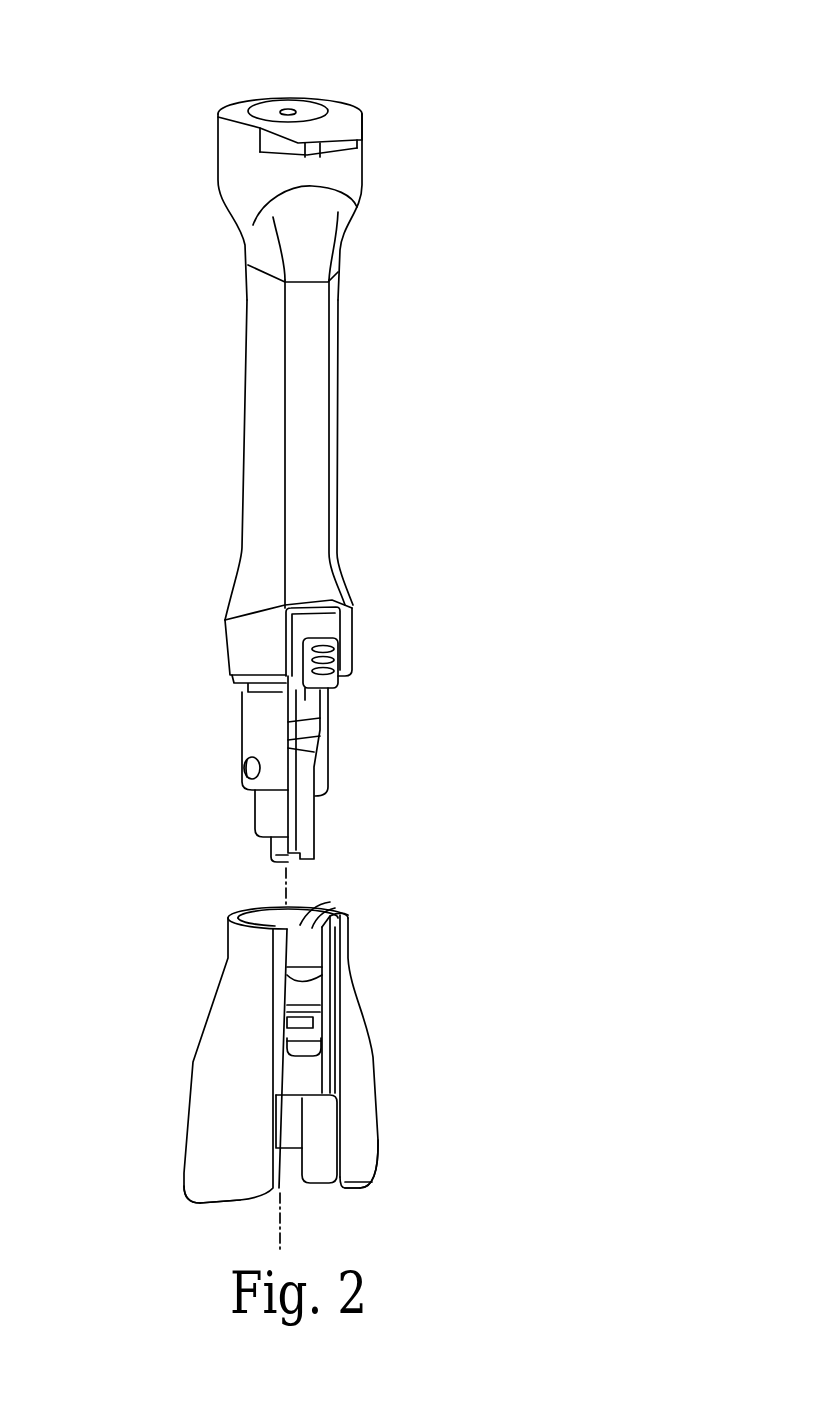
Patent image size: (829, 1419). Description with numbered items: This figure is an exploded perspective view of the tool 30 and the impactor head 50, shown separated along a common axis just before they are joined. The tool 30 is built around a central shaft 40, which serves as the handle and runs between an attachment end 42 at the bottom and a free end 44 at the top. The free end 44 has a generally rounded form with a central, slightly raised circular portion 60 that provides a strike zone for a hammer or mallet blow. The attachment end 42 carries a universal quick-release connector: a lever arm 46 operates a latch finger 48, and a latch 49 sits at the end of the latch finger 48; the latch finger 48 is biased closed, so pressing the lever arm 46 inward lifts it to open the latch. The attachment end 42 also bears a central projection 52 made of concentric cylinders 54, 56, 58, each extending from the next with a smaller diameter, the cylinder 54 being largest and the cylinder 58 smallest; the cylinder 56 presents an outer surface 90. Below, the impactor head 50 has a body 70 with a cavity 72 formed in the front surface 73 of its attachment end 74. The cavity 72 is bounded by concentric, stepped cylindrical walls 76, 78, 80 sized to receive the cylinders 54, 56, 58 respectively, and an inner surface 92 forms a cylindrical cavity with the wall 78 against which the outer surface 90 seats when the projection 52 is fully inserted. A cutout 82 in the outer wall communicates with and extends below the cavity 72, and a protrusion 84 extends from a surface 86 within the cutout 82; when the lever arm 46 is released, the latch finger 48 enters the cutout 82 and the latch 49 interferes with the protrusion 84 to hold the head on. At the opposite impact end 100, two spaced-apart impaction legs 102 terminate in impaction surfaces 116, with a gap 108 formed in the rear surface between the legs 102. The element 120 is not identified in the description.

The tool 30 is at (436, 315).
The central shaft 40 is at (338, 388).
The attachment end 42 is at (240, 657).
The free end 44 is at (345, 104).
The lever arm 46 is at (339, 662).
The latch finger 48 is at (303, 807).
The latch 49 is at (314, 844).
The impactor head 50 is at (150, 1052).
The central projection 52 is at (253, 723).
The cylinder 54 is at (246, 773).
The cylinder 56 is at (261, 807).
The cylinder 58 is at (273, 855).
The raised circular portion 60 is at (305, 105).
The body 70 is at (372, 1068).
The cavity 72 is at (307, 912).
The front surface 73 is at (336, 971).
The attachment end 74 is at (240, 918).
The cylindrical wall 76 is at (348, 912).
The cylindrical wall 78 is at (320, 968).
The cylindrical wall 80 is at (318, 1010).
The cutout 82 is at (294, 986).
The protrusion 84 is at (288, 1022).
The surface 86 is at (290, 1050).
The outer surface 90 is at (266, 840).
The inner surface 92 is at (288, 1004).
The impact end 100 is at (192, 1175).
The impaction legs 102 is at (372, 1176).
The gap 108 is at (287, 1172).
The impaction surfaces 116 is at (376, 1190).
The crossbar 120 is at (336, 1120).